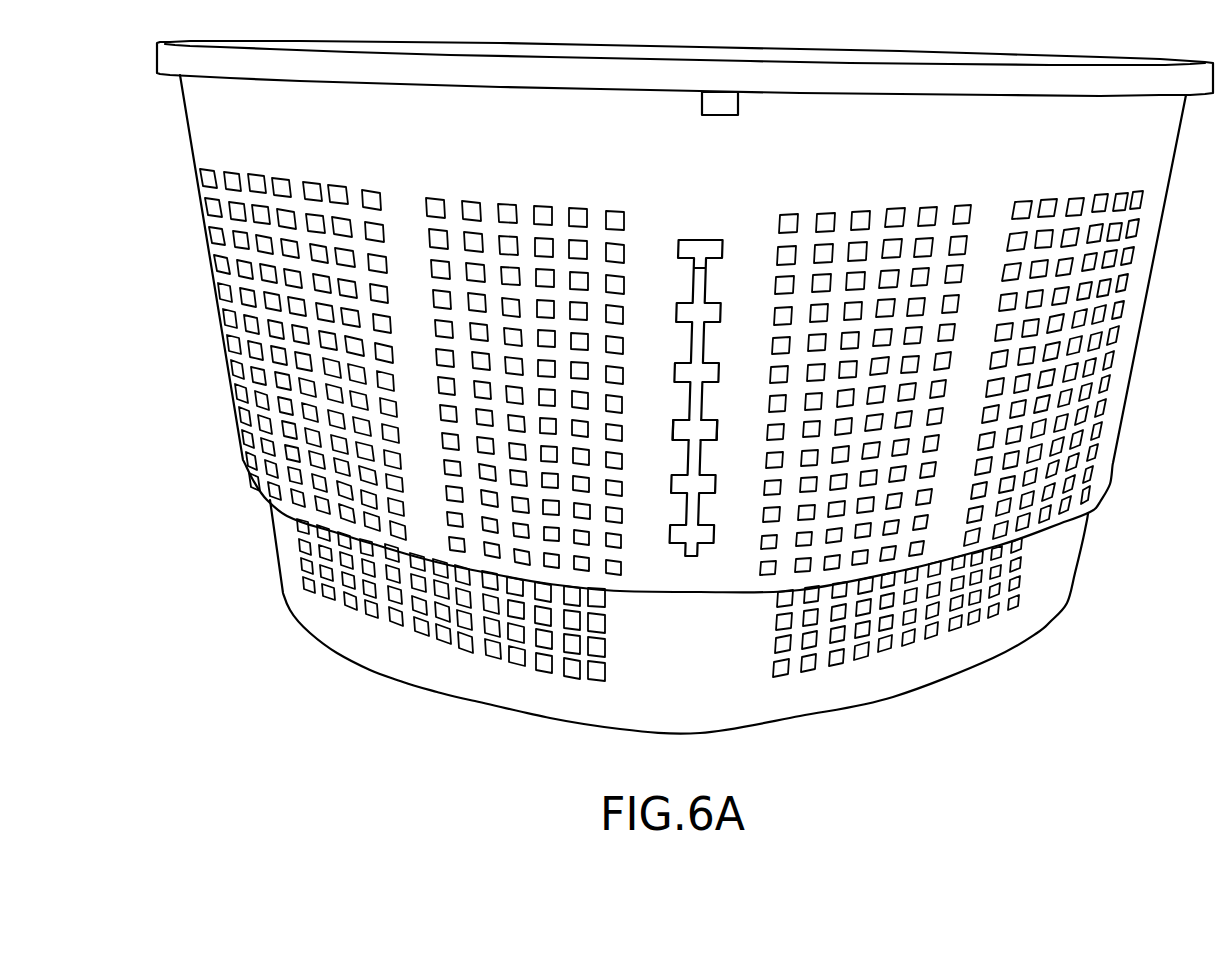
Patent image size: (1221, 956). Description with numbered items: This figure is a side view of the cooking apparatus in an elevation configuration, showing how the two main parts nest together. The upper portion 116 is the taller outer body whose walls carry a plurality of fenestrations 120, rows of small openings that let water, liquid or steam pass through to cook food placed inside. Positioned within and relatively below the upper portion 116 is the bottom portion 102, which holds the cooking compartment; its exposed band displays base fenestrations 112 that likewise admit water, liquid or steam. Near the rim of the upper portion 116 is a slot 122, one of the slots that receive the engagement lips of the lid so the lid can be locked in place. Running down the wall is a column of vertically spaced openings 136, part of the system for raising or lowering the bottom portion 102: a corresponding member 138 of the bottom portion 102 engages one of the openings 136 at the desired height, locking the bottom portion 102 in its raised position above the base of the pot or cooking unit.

The bottom portion 102 is at (272, 548).
The base fenestrations 112 is at (570, 622).
The upper portion 116 is at (228, 368).
The fenestrations 120 is at (480, 370).
The slots 122 is at (727, 106).
The vertically spaced openings 136 is at (711, 313).
The member 138 is at (693, 419).